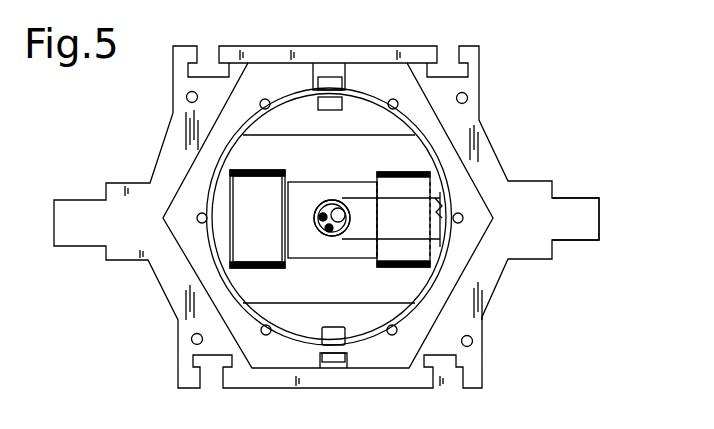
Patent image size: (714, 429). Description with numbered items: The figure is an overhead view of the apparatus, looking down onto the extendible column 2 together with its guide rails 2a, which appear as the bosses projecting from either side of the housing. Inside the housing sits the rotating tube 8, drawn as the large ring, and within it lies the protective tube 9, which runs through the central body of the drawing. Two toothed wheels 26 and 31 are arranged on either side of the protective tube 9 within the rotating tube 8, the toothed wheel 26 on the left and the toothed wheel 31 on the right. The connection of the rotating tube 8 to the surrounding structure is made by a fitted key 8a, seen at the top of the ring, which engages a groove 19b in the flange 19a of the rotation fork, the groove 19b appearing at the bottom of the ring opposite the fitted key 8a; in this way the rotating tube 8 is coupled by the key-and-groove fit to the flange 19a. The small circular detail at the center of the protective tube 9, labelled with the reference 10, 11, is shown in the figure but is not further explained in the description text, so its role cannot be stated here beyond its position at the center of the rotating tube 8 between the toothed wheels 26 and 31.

The extendible column 2 is at (490, 257).
The guide rails 2a is at (579, 223).
The rotating tube 8 is at (425, 298).
The fitted key 8a is at (332, 82).
The protective tube 9 is at (402, 230).
The bearing 10 is at (318, 232).
The bearing 11 is at (332, 218).
The flange 19a is at (241, 97).
The groove 19b is at (320, 348).
The toothed wheel 26 is at (242, 188).
The toothed wheel 31 is at (415, 183).